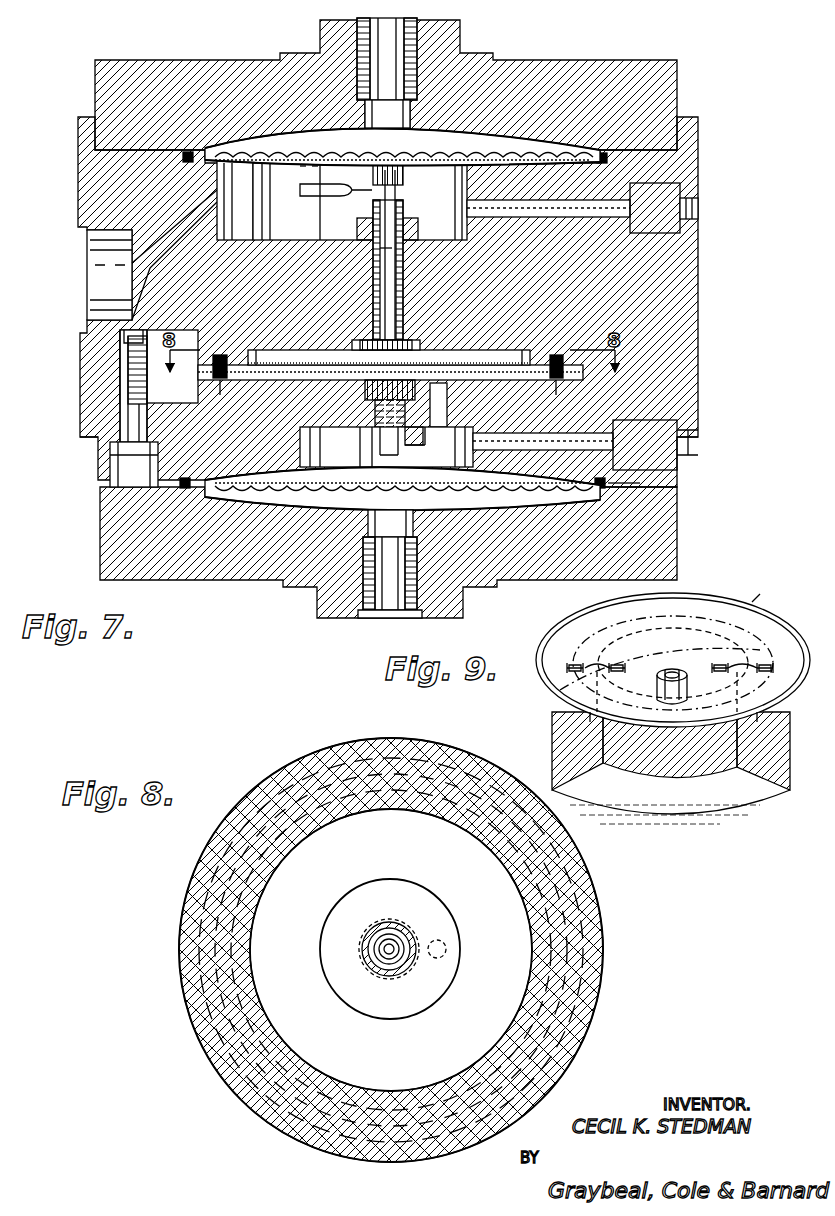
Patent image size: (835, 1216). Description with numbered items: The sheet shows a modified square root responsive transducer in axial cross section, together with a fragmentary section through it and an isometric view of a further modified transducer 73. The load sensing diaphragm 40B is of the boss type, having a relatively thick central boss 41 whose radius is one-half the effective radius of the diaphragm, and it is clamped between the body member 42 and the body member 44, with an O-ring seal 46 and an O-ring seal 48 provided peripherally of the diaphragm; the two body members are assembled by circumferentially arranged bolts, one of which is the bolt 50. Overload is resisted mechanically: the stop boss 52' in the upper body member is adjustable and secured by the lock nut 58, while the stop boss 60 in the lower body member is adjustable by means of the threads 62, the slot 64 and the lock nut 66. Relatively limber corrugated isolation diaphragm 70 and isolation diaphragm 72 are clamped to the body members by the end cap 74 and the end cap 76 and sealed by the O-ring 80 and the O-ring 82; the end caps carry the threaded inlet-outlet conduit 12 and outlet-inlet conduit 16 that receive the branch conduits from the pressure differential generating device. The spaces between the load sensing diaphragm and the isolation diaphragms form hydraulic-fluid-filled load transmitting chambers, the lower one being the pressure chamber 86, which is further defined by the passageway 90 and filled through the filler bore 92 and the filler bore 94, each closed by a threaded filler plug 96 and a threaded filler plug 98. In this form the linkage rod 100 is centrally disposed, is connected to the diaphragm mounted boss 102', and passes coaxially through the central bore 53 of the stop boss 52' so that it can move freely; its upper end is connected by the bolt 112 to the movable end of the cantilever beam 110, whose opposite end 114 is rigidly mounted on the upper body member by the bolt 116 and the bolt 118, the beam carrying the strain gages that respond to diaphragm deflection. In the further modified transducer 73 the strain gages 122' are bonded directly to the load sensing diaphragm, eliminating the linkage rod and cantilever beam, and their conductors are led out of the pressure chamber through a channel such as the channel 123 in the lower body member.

In FIG. 7, the inlet-outlet conduit 12 is at (418, 42).
In FIG. 7, the outlet-inlet conduit 16 is at (382, 615).
In FIG. 7, the load sensing diaphragm 40B is at (496, 365).
In FIG. 9, the load sensing diaphragm 40B is at (562, 690).
In FIG. 8, the load sensing diaphragm 40B is at (391, 879).
In FIG. 7, the central boss 41 is at (335, 352).
In FIG. 9, the central boss 41 is at (695, 648).
In FIG. 8, the central boss 41 is at (432, 918).
In FIG. 7, the body member 42 is at (698, 274).
In FIG. 9, the body member 42 is at (560, 750).
In FIG. 8, the body member 42 is at (180, 959).
In FIG. 7, the body member 44 is at (680, 413).
In FIG. 9, the body member 44 is at (702, 818).
In FIG. 7, the O-ring seal 46 is at (220, 355).
In FIG. 8, the O-ring seal 46 is at (232, 907).
In FIG. 7, the O-ring seal 48 is at (220, 380).
In FIG. 9, the O-ring seal 48 is at (588, 722).
In FIG. 7, the bolt 50 is at (112, 471).
In FIG. 7, the stop boss 52' is at (410, 270).
In FIG. 7, the central bore 53 is at (383, 255).
In FIG. 7, the lock nut 58 is at (418, 226).
In FIG. 7, the stop boss 60 is at (365, 401).
In FIG. 9, the stop boss 60 is at (666, 697).
In FIG. 7, the threads 62 is at (375, 412).
In FIG. 7, the slot 64 is at (400, 450).
In FIG. 7, the lock nut 66 is at (370, 443).
In FIG. 7, the isolation diaphragm 70 is at (402, 146).
In FIG. 7, the isolation diaphragm 72 is at (388, 480).
In FIG. 9, the transducer 73 is at (750, 604).
In FIG. 7, the end cap 74 is at (575, 72).
In FIG. 7, the end cap 76 is at (530, 582).
In FIG. 7, the O-ring 80 is at (188, 152).
In FIG. 7, the O-ring 82 is at (185, 490).
In FIG. 7, the load transmitting pressure chamber 86 is at (440, 450).
In FIG. 7, the passageway 90 is at (446, 414).
In FIG. 7, the filler bore 92 is at (625, 205).
In FIG. 7, the filler bore 94 is at (610, 483).
In FIG. 7, the threaded filler plug 96 is at (690, 195).
In FIG. 7, the threaded filler plug 98 is at (680, 468).
In FIG. 7, the linkage rod 100 is at (383, 283).
In FIG. 8, the linkage rod 100 is at (380, 972).
In FIG. 7, the diaphragm mounted boss 102' is at (414, 331).
In FIG. 8, the diaphragm mounted boss 102' is at (472, 938).
In FIG. 7, the cantilever beam 110 is at (404, 146).
In FIG. 7, the bolt 112 is at (403, 181).
In FIG. 7, the opposite end 114 is at (310, 192).
In FIG. 7, the bolt 116 is at (300, 166).
In FIG. 7, the bolt 118 is at (314, 166).
In FIG. 9, the strain gage 122' is at (670, 653).
In FIG. 7, the channel 123 is at (218, 190).